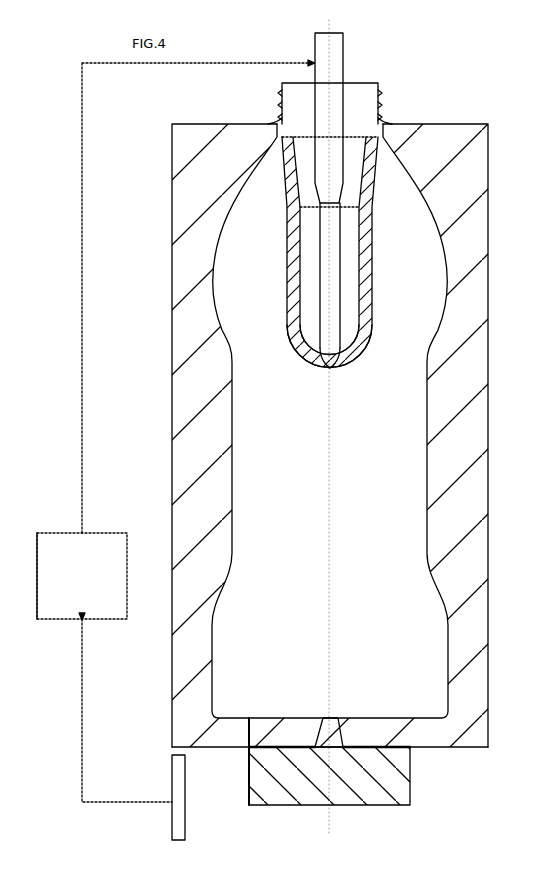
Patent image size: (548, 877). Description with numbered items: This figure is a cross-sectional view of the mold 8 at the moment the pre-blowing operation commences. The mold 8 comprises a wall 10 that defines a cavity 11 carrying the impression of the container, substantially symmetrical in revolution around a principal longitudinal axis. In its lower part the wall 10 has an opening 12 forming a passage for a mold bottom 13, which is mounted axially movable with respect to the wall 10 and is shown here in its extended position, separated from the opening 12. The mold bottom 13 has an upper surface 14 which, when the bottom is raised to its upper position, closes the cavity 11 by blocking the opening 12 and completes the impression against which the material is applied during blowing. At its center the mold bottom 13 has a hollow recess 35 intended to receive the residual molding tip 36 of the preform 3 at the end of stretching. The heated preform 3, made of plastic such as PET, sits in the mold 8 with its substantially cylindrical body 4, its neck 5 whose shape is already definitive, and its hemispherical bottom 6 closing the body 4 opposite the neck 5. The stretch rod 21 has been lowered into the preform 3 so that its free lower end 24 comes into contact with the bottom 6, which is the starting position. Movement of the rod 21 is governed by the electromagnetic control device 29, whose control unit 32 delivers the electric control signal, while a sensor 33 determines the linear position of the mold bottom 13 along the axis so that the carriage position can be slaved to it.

The preform 3 is at (334, 252).
The body 4 is at (286, 265).
The neck 5 is at (380, 100).
The bottom 6 is at (335, 355).
The mold 8 is at (488, 283).
The wall 10 is at (462, 386).
The cavity 11 is at (306, 447).
The opening 12 is at (393, 726).
The mold bottom 13 is at (412, 777).
The upper surface 14 is at (294, 742).
The stretch rod 21 is at (340, 62).
The free lower end 24 is at (323, 350).
The electromagnetic control device 29 is at (50, 533).
The control unit 32 is at (91, 581).
The sensor 33 is at (186, 802).
The hollow recess 35 is at (331, 719).
The residual molding tip 36 is at (330, 367).